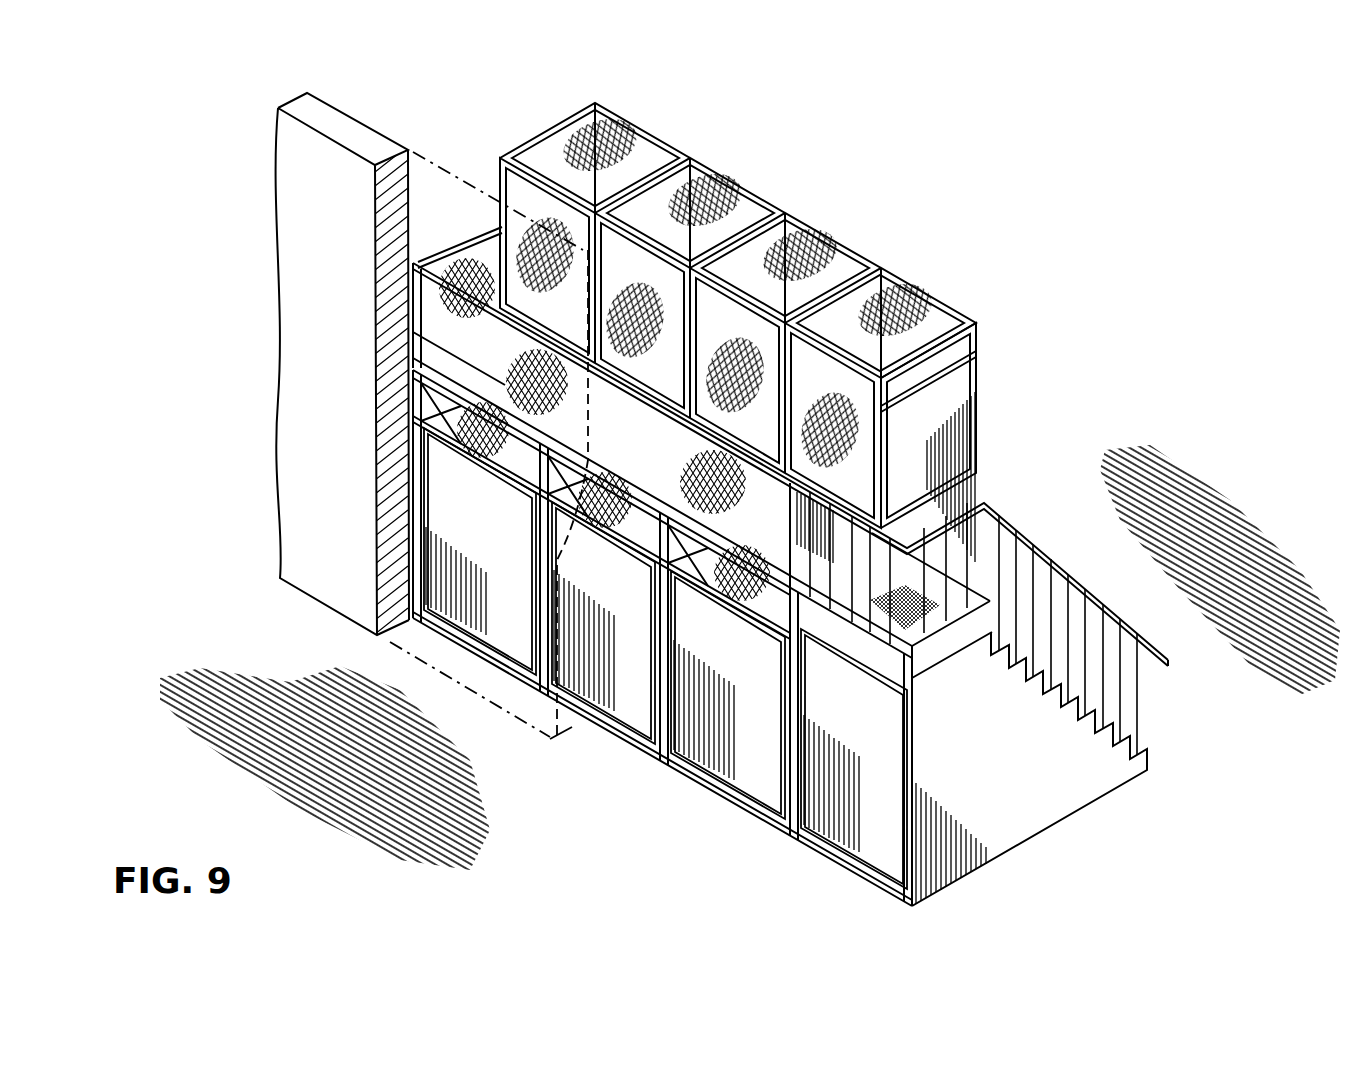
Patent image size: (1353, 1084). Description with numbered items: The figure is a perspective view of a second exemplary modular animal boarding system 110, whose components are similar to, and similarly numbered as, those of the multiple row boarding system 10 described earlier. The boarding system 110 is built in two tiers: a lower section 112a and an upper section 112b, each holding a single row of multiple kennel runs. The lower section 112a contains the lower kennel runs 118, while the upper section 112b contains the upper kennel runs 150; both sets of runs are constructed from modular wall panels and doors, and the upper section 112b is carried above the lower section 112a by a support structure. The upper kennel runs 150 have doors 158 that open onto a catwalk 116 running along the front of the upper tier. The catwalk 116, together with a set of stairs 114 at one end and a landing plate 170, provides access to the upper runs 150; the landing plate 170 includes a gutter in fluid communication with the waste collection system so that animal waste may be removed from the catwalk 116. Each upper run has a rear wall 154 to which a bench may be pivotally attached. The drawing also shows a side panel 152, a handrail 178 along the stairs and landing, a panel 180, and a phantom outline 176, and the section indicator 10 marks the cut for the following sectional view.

The boarding system 110 is at (1094, 242).
The lower section 112a is at (925, 908).
The upper section 112b is at (1018, 458).
The stairs 114 is at (1045, 873).
The catwalk 116 is at (800, 557).
The lower kennel run 118 is at (442, 660).
The upper kennel run 150 is at (689, 134).
The side panel 152 is at (972, 401).
The rear wall 154 is at (983, 430).
The door 158 is at (554, 236).
The landing plate 170 is at (835, 592).
The phantom pathway outline 176 is at (513, 237).
The handrail 178 is at (1075, 594).
The panel 180 is at (457, 335).
The boarding system 10 is at (816, 131).